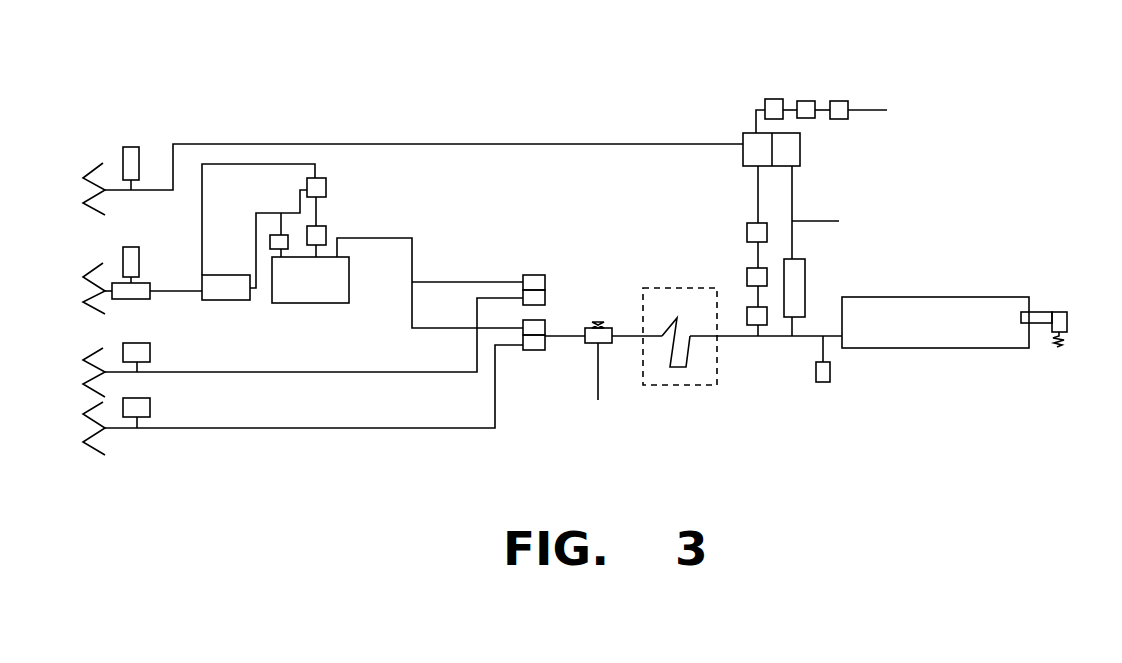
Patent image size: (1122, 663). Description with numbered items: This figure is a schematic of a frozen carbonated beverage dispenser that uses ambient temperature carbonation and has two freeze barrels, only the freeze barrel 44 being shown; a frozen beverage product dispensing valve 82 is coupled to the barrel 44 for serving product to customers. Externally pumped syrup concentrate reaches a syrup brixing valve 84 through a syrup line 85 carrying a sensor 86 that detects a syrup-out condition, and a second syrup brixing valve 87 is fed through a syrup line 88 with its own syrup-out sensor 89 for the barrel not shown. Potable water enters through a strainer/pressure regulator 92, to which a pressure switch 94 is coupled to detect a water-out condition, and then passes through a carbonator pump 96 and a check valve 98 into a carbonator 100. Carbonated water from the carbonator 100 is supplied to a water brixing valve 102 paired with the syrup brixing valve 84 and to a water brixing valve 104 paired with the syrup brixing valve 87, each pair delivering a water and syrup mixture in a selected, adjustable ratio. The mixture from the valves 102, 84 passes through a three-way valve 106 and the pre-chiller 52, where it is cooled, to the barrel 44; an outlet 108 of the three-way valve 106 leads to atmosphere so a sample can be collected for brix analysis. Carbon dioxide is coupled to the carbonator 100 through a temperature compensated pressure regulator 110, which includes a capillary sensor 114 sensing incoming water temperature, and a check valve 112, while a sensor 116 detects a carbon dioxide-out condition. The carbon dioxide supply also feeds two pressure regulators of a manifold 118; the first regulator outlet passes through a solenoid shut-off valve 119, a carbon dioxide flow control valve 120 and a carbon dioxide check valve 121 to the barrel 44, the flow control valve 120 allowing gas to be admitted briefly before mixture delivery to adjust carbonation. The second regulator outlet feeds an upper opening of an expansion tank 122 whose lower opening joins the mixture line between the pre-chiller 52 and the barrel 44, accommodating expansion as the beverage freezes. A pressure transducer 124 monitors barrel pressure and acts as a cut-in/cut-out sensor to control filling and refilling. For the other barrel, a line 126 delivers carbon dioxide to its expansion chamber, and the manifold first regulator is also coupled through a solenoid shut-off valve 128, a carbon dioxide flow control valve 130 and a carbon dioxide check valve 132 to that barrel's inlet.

The beverage product freeze barrel 44 is at (947, 297).
The pre-chiller 52 is at (703, 373).
The frozen beverage product dispensing valve 82 is at (1058, 314).
The syrup brixing valve 84 is at (534, 345).
The syrup line 85 is at (278, 428).
The sensor 86 is at (150, 407).
The syrup brixing valve 87 is at (542, 297).
The syrup line 88 is at (292, 372).
The sensor 89 is at (150, 352).
The strainer/pressure regulator 92 is at (130, 300).
The pressure switch 94 is at (131, 250).
The carbonator pump 96 is at (223, 288).
The check valve 98 is at (276, 242).
The carbonator 100 is at (333, 290).
The water brixing valve 102 is at (543, 327).
The water brixing valve 104 is at (537, 283).
The 3-way valve 106 is at (603, 342).
The outlet 108 is at (597, 388).
The temperature compensated pressure regulator 110 is at (318, 190).
The check valve 112 is at (318, 236).
The capillary sensor 114 is at (300, 191).
The sensor 116 is at (131, 158).
The manifold 118 is at (745, 138).
The solenoid shut-off valve 119 is at (748, 232).
The CO2 flow control valve 120 is at (748, 275).
The CO2 check valve 121 is at (767, 322).
The expansion tank 122 is at (797, 272).
The pressure transducer 124 is at (823, 369).
The line 126 is at (822, 221).
The solenoid shut-off valve 128 is at (773, 108).
The CO2 flow control valve 130 is at (808, 108).
The CO2 check valve 132 is at (836, 114).